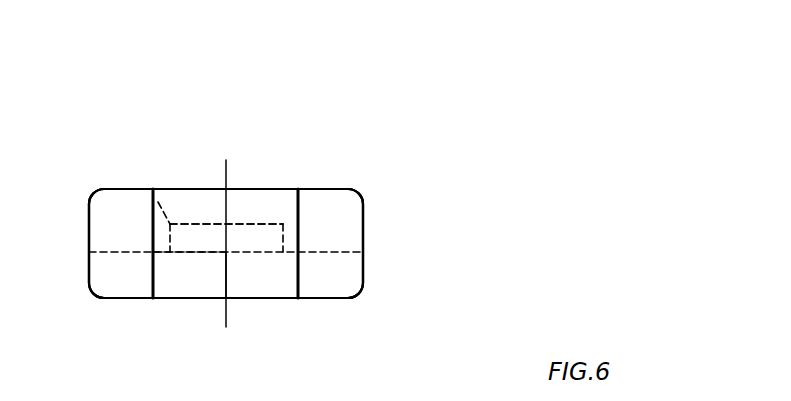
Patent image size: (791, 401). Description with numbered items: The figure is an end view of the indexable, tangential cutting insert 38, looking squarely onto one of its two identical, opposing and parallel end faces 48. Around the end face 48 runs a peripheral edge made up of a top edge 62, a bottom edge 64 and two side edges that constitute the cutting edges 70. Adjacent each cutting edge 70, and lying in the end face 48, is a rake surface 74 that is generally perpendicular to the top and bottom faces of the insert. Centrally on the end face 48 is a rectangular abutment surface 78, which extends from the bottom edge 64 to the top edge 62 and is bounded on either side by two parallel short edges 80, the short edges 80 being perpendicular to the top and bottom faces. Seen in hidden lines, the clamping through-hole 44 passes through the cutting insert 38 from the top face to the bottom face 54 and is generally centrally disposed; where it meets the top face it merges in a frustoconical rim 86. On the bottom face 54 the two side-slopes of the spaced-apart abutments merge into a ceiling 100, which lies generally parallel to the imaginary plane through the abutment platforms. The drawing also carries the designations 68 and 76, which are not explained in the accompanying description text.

The cutting insert 38 is at (511, 79).
The clamping through-hole 44 is at (283, 240).
The end face 48 is at (332, 213).
The bottom face 54 is at (343, 309).
The top edge 62 is at (202, 189).
The bottom edge 64 is at (208, 299).
The housing 68 is at (91, 192).
The cutting edges 70 is at (89, 225).
The rake surface 74 is at (337, 270).
The central chamber 76 is at (280, 290).
The abutment surface 78 is at (177, 272).
The short edges 80 is at (153, 222).
The frustoconical rim 86 is at (283, 224).
The ceiling 100 is at (133, 255).